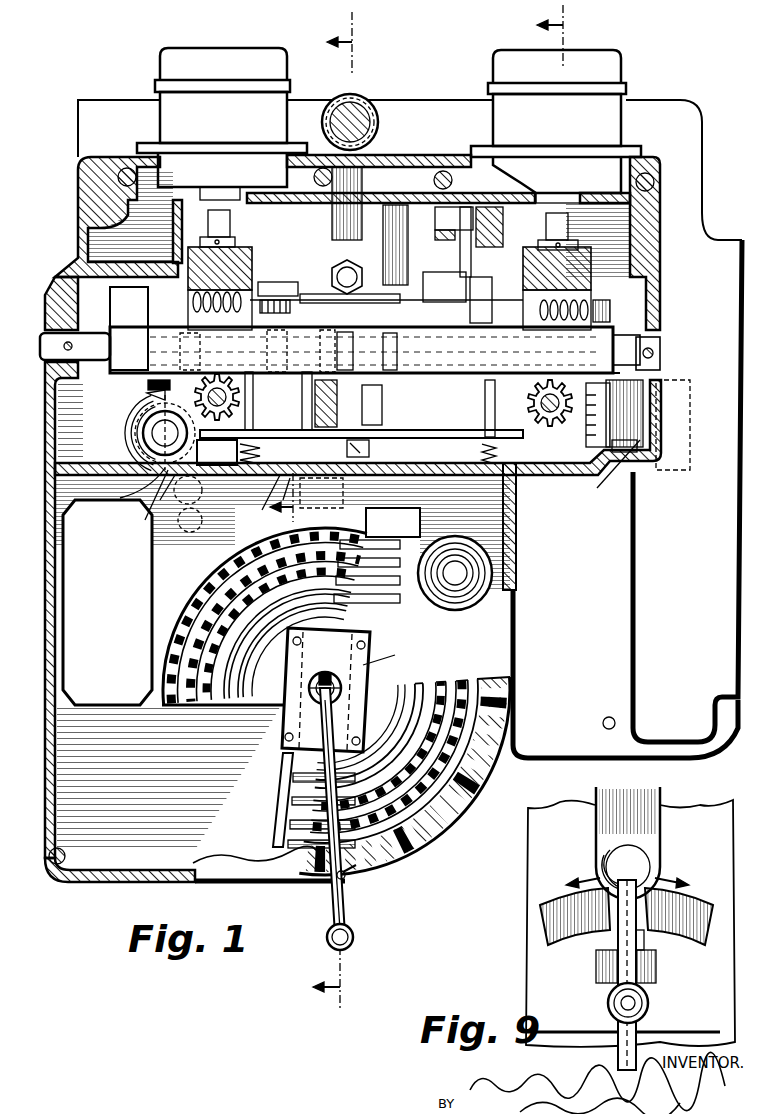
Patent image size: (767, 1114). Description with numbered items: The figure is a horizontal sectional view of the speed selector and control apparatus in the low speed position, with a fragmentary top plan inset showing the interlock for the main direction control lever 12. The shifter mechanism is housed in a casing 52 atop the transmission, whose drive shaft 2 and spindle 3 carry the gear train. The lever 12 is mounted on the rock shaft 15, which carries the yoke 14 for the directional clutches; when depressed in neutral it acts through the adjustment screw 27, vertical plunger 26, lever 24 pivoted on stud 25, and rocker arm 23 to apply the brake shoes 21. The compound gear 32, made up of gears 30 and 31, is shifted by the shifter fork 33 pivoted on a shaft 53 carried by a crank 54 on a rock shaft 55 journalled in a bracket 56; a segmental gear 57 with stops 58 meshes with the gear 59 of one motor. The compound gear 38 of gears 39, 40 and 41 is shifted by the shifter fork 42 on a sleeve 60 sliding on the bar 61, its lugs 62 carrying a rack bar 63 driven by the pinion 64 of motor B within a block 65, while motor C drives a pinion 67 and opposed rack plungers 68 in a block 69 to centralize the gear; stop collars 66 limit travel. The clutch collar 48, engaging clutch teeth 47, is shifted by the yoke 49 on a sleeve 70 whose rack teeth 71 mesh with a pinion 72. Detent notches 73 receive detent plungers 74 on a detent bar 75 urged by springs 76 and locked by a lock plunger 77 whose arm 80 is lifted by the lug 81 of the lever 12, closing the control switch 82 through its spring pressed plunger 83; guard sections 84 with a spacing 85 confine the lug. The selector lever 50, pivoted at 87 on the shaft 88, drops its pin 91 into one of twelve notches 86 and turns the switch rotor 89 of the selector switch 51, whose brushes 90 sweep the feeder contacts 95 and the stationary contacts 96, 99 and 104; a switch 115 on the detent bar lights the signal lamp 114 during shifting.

In FIG. 1, the single direction electric motor C is at (292, 78).
In FIG. 1, the reversible electric motor B is at (626, 68).
In FIG. 1, the drive shaft 2 is at (448, 505).
In FIG. 1, the driven shaft or spindle 3 is at (321, 267).
In FIG. 9, the main direction control lever 12 is at (660, 830).
In FIG. 1, the yoke 14 is at (332, 218).
In FIG. 1, the control or rock shaft 15 is at (378, 130).
In FIG. 1, the brake shoes 21 is at (455, 207).
In FIG. 1, the rocker arm 23 is at (471, 262).
In FIG. 1, the lever 24 is at (432, 272).
In FIG. 1, the stud 25 is at (383, 250).
In FIG. 1, the vertical plunger 26 is at (335, 294).
In FIG. 1, the adjustment screw 27 is at (331, 275).
In FIG. 1, the gear 30 is at (361, 350).
In FIG. 1, the gear 31 is at (148, 385).
In FIG. 1, the compound gear 32 is at (147, 395).
In FIG. 1, the shifter fork 33 is at (200, 500).
In FIG. 1, the compound gear 38 is at (345, 427).
In FIG. 1, the gear 39 is at (268, 492).
In FIG. 1, the gear 40 is at (272, 500).
In FIG. 1, the gear 41 is at (350, 500).
In FIG. 1, the shifter fork 42 is at (337, 400).
In FIG. 1, the clutch teeth 47 is at (643, 425).
In FIG. 1, the toothed clutch collar 48 is at (607, 472).
In FIG. 1, the shifter yoke 49 is at (643, 392).
In FIG. 1, the selector lever 50 is at (335, 910).
In FIG. 1, the selector switch 51 is at (370, 700).
In FIG. 1, the casing 52 is at (520, 552).
In FIG. 9, the casing 52 is at (712, 815).
In FIG. 1, the shaft 53 is at (197, 530).
In FIG. 1, the crank 54 is at (146, 499).
In FIG. 1, the rock shaft 55 is at (131, 488).
In FIG. 1, the bracket 56 is at (107, 602).
In FIG. 1, the segmental gear 57 is at (140, 428).
In FIG. 1, the stops 58 is at (217, 452).
In FIG. 1, the gear 59 is at (230, 375).
In FIG. 1, the sleeve 60 is at (272, 282).
In FIG. 1, the bar 61 is at (393, 373).
In FIG. 1, the lugs 62 is at (270, 268).
In FIG. 1, the rack bar 63 is at (399, 351).
In FIG. 1, the pinion 64 is at (566, 281).
In FIG. 1, the block 65 is at (550, 325).
In FIG. 1, the stop collars 66 is at (55, 330).
In FIG. 1, the pinion 67 is at (180, 340).
In FIG. 1, the rack plungers 68 is at (129, 348).
In FIG. 1, the block 69 is at (252, 262).
In FIG. 1, the sleeve 70 is at (450, 375).
In FIG. 1, the rack teeth 71 is at (586, 440).
In FIG. 1, the pinion 72 is at (538, 405).
In FIG. 1, the detent notches 73 is at (384, 380).
In FIG. 1, the detent plungers 74 is at (485, 400).
In FIG. 1, the detent bar 75 is at (361, 425).
In FIG. 1, the compression springs 76 is at (478, 455).
In FIG. 1, the lock plunger 77 is at (364, 451).
In FIG. 9, the lock plunger 77 is at (648, 1003).
In FIG. 9, the arm 80 is at (618, 945).
In FIG. 9, the lug 81 is at (661, 943).
In FIG. 9, the electrical control switch 82 is at (656, 968).
In FIG. 9, the spring pressed plunger 83 is at (596, 968).
In FIG. 9, the channel guard sections 84 is at (548, 905).
In FIG. 9, the spacing 85 is at (622, 880).
In FIG. 1, the notches 86 is at (500, 770).
In FIG. 1, the pivot 87 is at (309, 688).
In FIG. 1, the shaft 88 is at (325, 673).
In FIG. 1, the switch rotor 89 is at (388, 660).
In FIG. 1, the brushes 90 is at (378, 565).
In FIG. 1, the pin 91 is at (350, 887).
In FIG. 1, the arcuate feeder contacts 95 is at (262, 625).
In FIG. 1, the stationary contacts 96 is at (222, 705).
In FIG. 1, the motor contacts 99 is at (196, 705).
In FIG. 1, the motor contacts 104 is at (165, 700).
In FIG. 1, the signal lamp 114 is at (516, 585).
In FIG. 1, the switch 115 is at (393, 522).